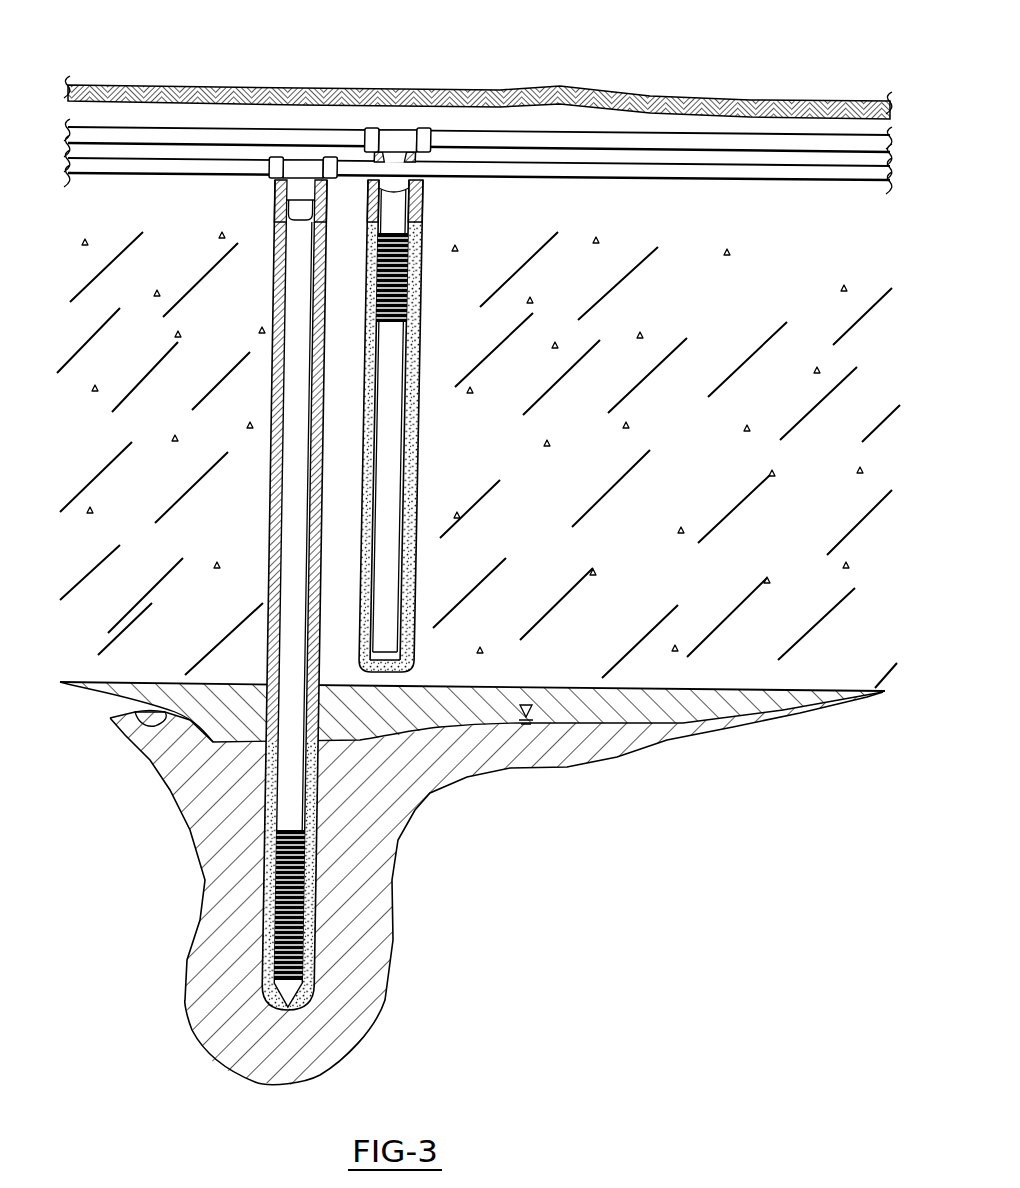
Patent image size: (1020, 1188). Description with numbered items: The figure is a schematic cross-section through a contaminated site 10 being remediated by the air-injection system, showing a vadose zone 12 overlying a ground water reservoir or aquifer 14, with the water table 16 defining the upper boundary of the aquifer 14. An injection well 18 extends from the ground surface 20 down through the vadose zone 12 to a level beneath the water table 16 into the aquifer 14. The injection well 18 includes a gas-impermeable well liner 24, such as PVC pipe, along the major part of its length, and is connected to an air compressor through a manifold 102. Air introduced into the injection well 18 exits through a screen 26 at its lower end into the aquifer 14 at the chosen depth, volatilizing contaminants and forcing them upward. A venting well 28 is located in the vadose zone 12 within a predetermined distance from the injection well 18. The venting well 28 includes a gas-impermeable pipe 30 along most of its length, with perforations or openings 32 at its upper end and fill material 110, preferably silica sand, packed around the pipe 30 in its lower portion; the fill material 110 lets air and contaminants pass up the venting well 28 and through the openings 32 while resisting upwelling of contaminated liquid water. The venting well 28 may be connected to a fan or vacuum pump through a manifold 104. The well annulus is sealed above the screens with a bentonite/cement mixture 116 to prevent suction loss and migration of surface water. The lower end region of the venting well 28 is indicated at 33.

The contaminated site 10 is at (602, 66).
The vadose zone 12 is at (697, 494).
The ground water reservoir or aquifer 14 is at (392, 832).
The water table 16 is at (728, 688).
The injection well 18 is at (272, 597).
The ground surface 20 is at (427, 99).
The well liner 24 is at (300, 535).
The screen 26 is at (281, 888).
The venting well 28 is at (423, 523).
The gas-impermeable pipe 30 is at (392, 598).
The perforations or openings 32 is at (412, 293).
The well bottom 33 is at (395, 668).
The manifold 102 is at (673, 173).
The manifold 104 is at (717, 143).
The fill material 110 is at (414, 197).
The bentonite/cement mixture 116 is at (275, 238).